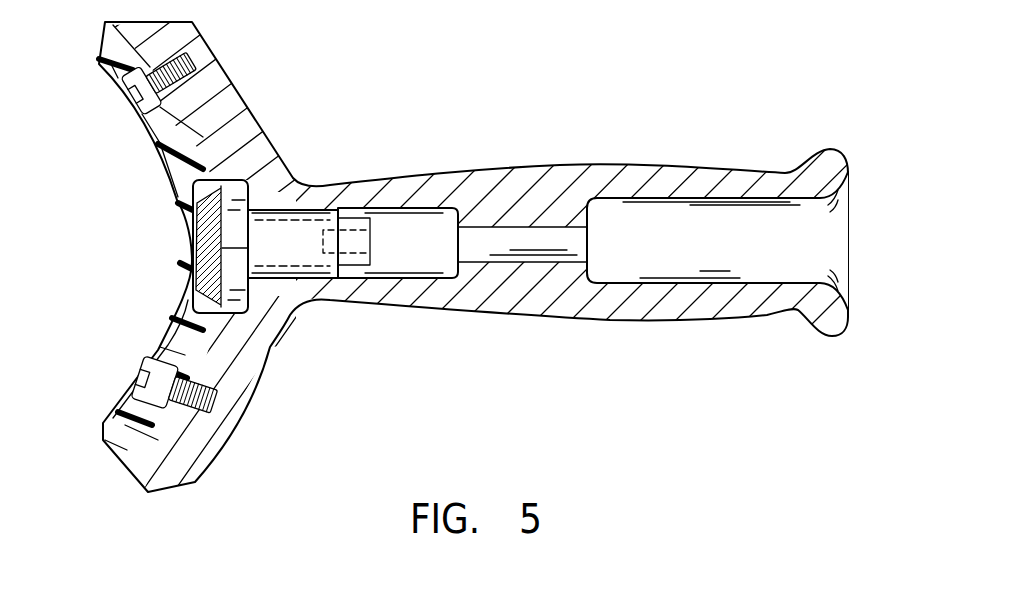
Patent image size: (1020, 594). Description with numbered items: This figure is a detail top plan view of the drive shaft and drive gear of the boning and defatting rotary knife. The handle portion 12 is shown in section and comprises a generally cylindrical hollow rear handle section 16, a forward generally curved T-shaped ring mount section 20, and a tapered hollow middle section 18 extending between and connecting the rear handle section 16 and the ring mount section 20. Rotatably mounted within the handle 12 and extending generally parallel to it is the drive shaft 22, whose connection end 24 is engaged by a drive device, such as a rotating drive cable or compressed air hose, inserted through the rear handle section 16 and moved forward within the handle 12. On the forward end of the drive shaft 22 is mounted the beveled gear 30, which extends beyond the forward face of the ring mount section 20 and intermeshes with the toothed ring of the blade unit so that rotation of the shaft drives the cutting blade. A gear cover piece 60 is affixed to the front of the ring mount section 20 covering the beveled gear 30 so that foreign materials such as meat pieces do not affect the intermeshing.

The handle portion 12 is at (487, 288).
The rear handle section 16 is at (693, 179).
The middle section 18 is at (376, 180).
The ring mount section 20 is at (232, 112).
The drive shaft 22 is at (303, 275).
The connection end 24 is at (342, 253).
The beveled gear 30 is at (205, 246).
The gear cover piece 60 is at (125, 432).